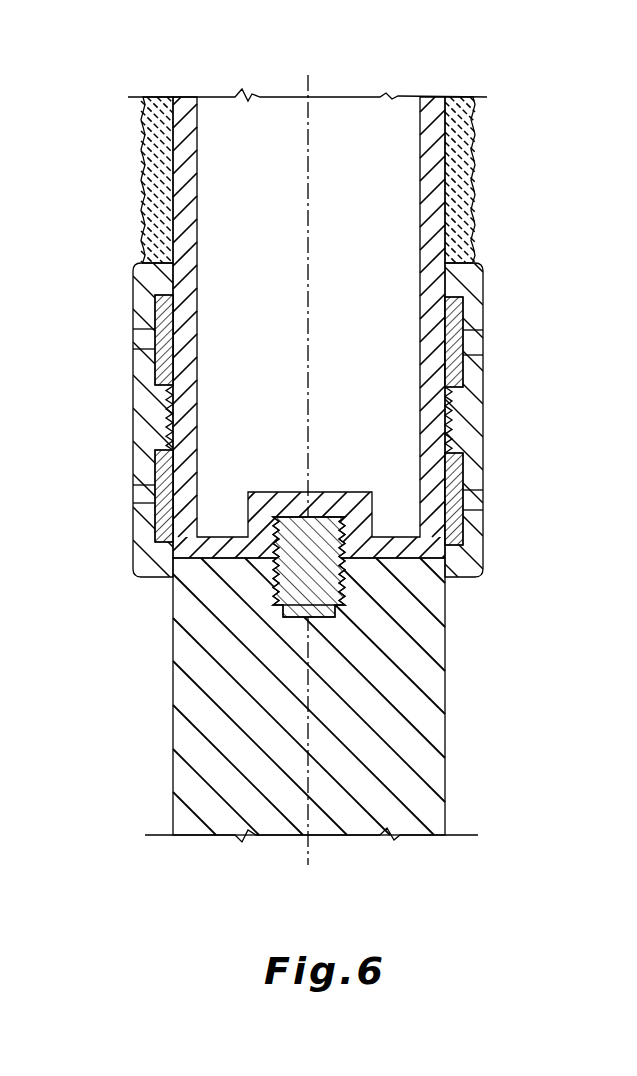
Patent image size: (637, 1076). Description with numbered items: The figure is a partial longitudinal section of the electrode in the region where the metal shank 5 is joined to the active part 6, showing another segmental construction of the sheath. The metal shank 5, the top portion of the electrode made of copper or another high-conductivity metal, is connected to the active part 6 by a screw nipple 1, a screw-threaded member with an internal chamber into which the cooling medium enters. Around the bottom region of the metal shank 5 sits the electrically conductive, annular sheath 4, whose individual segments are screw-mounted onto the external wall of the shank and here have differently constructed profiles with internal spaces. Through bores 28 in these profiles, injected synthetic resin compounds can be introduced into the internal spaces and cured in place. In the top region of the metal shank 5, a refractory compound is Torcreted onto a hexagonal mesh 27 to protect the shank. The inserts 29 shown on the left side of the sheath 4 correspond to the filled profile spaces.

The screw nipple 1 is at (308, 532).
The sheath 4 is at (143, 398).
The metal shank 5 is at (430, 115).
The active part 6 is at (313, 815).
The hexagonal mesh 27 is at (162, 96).
The bores 28 is at (483, 330).
The insert 29 is at (160, 315).